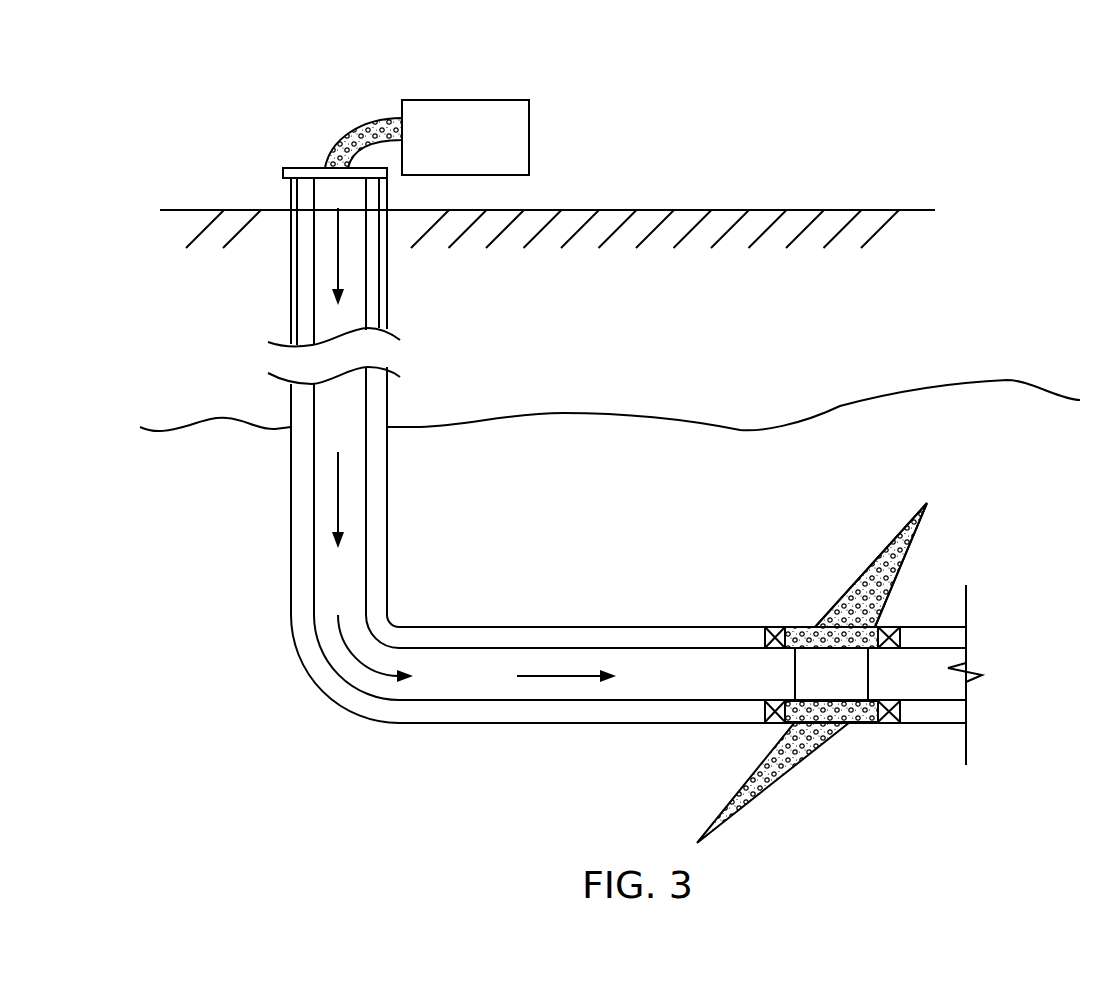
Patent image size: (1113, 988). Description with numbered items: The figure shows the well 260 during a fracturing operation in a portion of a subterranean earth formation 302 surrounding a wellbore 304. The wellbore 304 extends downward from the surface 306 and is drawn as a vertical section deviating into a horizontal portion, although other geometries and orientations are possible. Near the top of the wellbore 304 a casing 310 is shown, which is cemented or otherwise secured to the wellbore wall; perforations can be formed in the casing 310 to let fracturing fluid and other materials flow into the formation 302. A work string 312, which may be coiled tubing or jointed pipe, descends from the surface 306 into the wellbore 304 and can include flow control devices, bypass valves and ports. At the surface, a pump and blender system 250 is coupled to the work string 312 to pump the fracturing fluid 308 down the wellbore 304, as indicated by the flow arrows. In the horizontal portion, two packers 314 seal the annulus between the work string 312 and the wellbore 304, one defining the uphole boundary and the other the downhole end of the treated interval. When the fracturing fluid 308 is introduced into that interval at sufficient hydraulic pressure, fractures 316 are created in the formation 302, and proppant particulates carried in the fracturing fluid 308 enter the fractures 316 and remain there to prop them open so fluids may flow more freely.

The pump and blender system 250 is at (480, 100).
The well 260 is at (306, 715).
The subterranean earth formation 302 is at (657, 475).
The wellbore 304 is at (298, 286).
The surface 306 is at (723, 210).
The fracturing fluid 308 is at (352, 130).
The casing 310 is at (293, 343).
The work string 312 is at (313, 518).
The packers 314 is at (775, 627).
The fractures 316 is at (848, 568).